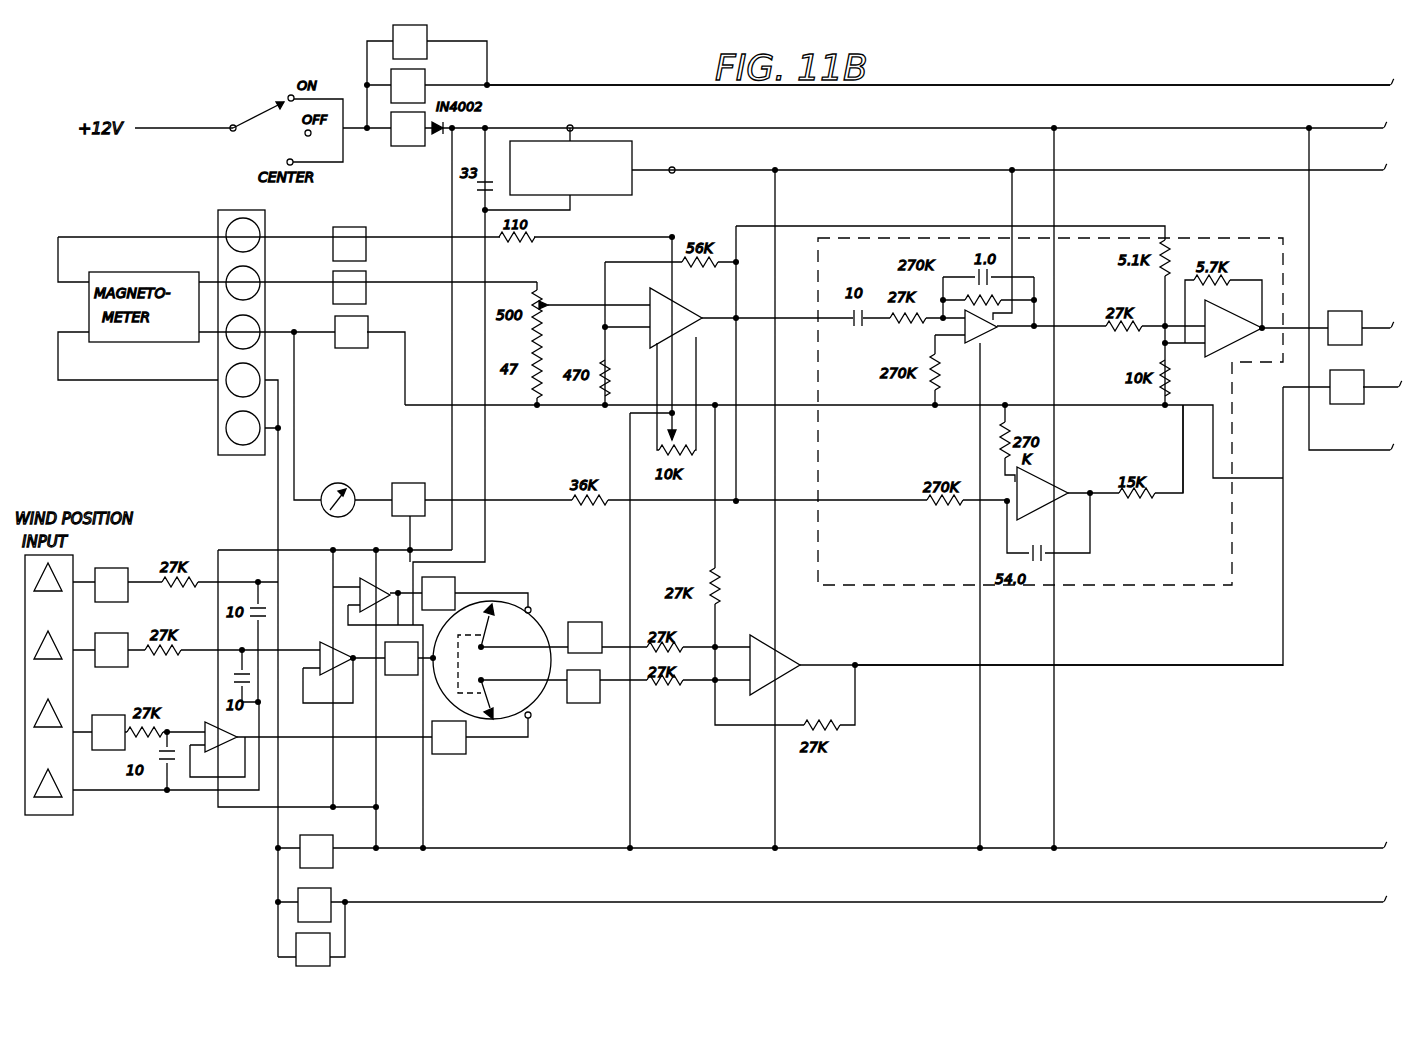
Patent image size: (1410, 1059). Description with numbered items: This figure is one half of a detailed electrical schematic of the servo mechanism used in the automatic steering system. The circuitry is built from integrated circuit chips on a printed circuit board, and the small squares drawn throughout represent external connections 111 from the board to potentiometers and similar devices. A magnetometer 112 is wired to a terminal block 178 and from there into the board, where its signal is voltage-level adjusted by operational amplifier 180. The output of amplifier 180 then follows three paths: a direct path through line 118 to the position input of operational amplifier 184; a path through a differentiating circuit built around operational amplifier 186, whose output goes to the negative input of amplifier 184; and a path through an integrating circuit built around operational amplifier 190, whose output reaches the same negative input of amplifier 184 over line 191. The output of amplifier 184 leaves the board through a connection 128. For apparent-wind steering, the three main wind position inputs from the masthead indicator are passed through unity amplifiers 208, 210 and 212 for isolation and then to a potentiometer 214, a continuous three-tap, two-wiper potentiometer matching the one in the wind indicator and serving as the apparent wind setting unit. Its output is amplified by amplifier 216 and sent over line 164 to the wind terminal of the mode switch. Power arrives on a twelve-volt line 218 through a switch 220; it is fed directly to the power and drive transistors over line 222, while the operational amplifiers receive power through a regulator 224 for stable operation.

The external connections 111 is at (420, 37).
The magnetometer 112 is at (89, 308).
The line 118 is at (847, 236).
The output line 128 is at (1320, 318).
The line 164 is at (1182, 665).
The terminal block 178 is at (218, 213).
The operational amplifier 180 is at (698, 306).
The operational amplifier 184 is at (1216, 358).
The operational amplifier 186 is at (984, 338).
The operational amplifier 190 is at (1076, 468).
The line 191 is at (1180, 444).
The unity amplifier 208 is at (214, 722).
The unity amplifier 210 is at (322, 642).
The unity amplifier 212 is at (362, 576).
The potentiometer 214 is at (536, 622).
The amplifier 216 is at (788, 654).
The 12-volt line 218 is at (181, 128).
The switch 220 is at (258, 107).
The line 222 is at (559, 84).
The regulator 224 is at (636, 153).